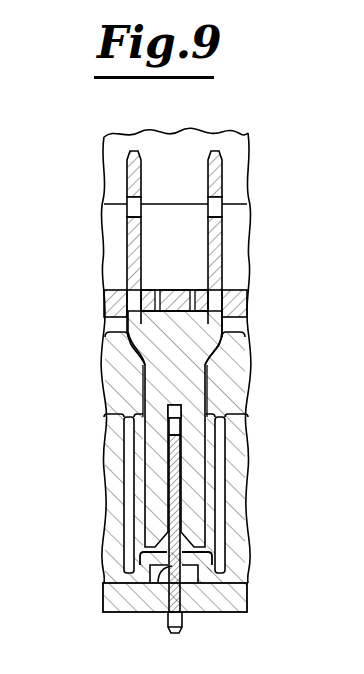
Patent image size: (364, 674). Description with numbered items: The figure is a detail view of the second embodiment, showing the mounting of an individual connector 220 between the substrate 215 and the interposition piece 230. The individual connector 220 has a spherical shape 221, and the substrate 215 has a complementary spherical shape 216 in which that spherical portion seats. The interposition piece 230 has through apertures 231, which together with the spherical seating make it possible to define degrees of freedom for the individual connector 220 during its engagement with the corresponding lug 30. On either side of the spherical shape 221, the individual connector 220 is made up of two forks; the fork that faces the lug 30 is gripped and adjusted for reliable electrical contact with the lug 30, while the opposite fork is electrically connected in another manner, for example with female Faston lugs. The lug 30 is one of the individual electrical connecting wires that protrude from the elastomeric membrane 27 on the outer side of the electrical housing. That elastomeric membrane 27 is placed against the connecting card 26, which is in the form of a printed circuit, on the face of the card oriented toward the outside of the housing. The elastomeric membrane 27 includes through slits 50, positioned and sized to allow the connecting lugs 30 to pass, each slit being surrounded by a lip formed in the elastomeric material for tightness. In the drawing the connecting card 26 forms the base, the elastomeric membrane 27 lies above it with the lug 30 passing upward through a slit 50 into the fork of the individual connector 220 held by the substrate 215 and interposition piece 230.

The individual connector 220 is at (215, 170).
The through apertures 231 is at (175, 293).
The interposition piece 230 is at (105, 300).
The complementary spherical shape 216 is at (133, 340).
The substrate 215 is at (120, 377).
The spherical shape 221 is at (235, 355).
The connecting lug 30 is at (176, 483).
The through slits 50 is at (158, 560).
The elastomeric membrane 27 is at (232, 575).
The connecting card 26 is at (115, 602).